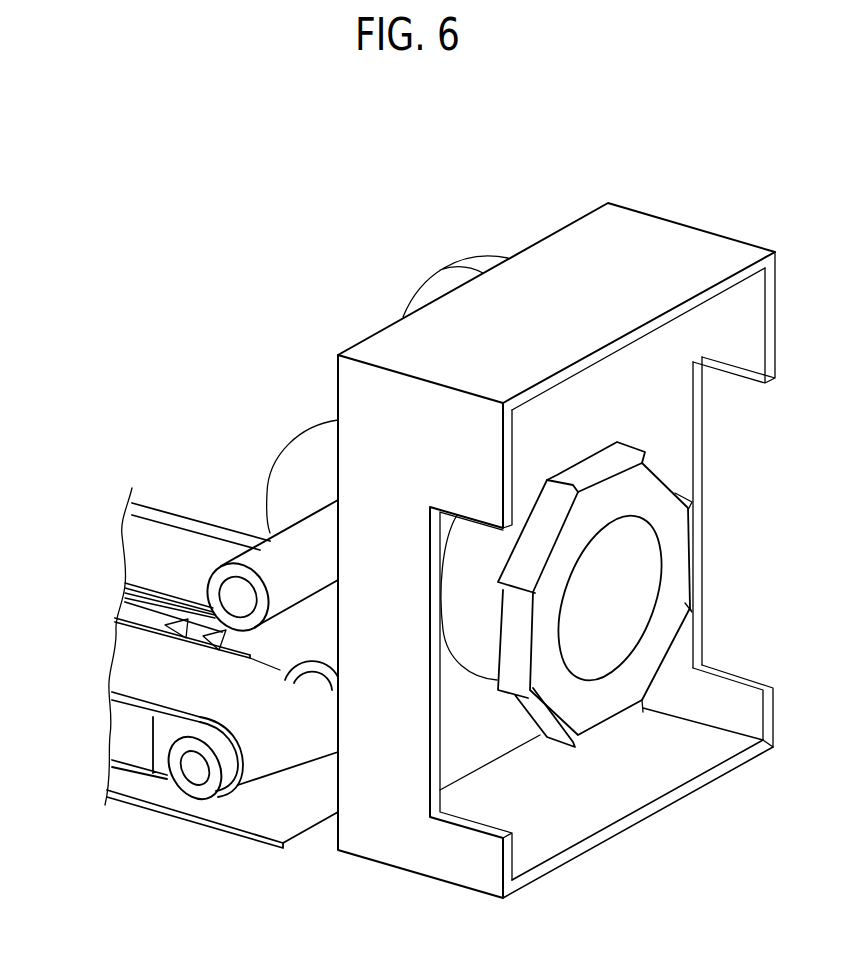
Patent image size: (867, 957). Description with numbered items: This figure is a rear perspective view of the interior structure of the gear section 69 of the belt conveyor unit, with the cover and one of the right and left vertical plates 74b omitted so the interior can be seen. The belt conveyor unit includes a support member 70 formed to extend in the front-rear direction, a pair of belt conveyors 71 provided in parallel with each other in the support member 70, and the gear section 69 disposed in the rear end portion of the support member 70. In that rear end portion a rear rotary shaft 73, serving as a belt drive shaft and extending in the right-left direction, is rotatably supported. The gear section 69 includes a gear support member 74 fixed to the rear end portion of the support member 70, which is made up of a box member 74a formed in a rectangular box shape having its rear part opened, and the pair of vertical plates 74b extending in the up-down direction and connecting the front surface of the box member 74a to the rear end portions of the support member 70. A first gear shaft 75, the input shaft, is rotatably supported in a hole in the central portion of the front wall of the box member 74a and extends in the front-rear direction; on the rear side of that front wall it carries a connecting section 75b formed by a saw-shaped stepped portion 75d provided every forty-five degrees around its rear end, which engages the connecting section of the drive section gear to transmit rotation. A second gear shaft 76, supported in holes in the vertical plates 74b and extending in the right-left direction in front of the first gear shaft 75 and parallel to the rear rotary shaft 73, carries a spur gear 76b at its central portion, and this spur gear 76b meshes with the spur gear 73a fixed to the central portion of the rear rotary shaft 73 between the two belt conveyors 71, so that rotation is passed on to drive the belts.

The gear section 69 is at (270, 245).
The support member 70 is at (247, 810).
The belt conveyors 71 is at (143, 550).
The rear rotary shaft 73 is at (192, 768).
The spur gear 73a is at (277, 648).
The gear support member 74 is at (675, 222).
The box member 74a is at (562, 262).
The vertical plates 74b is at (468, 262).
The first gear shaft 75 is at (483, 657).
The connecting section 75b is at (625, 707).
The stepped portion 75d is at (577, 750).
The second gear shaft 76 is at (233, 592).
The spur gear 76b is at (297, 465).